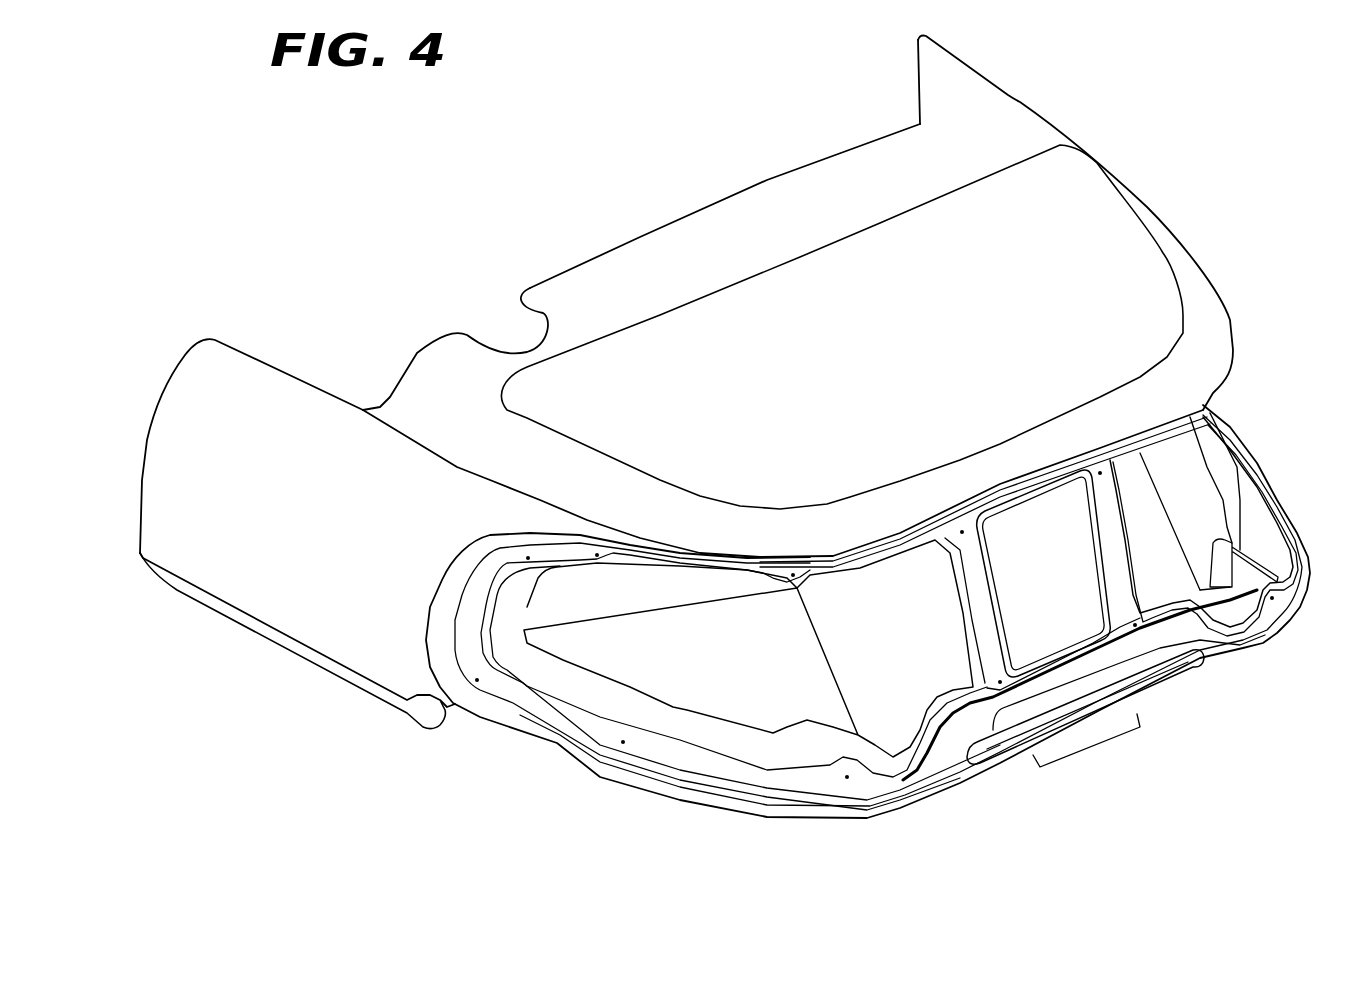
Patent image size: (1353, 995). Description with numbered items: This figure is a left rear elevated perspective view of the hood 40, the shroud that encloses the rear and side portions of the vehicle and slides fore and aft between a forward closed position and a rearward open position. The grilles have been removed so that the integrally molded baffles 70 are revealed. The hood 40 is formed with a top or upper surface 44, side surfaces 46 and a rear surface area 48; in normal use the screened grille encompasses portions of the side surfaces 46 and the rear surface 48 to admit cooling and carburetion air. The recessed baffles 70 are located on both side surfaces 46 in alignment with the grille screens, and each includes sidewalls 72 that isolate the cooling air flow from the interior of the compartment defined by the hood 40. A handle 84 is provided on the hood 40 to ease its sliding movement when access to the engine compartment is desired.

The hood 40 is at (1103, 775).
The upper surface 44 is at (866, 337).
The side surfaces 46 is at (305, 403).
The rear surface area 48 is at (1213, 650).
The recessed baffles 70 is at (675, 583).
The sidewalls 72 is at (707, 760).
The handle 84 is at (1150, 688).